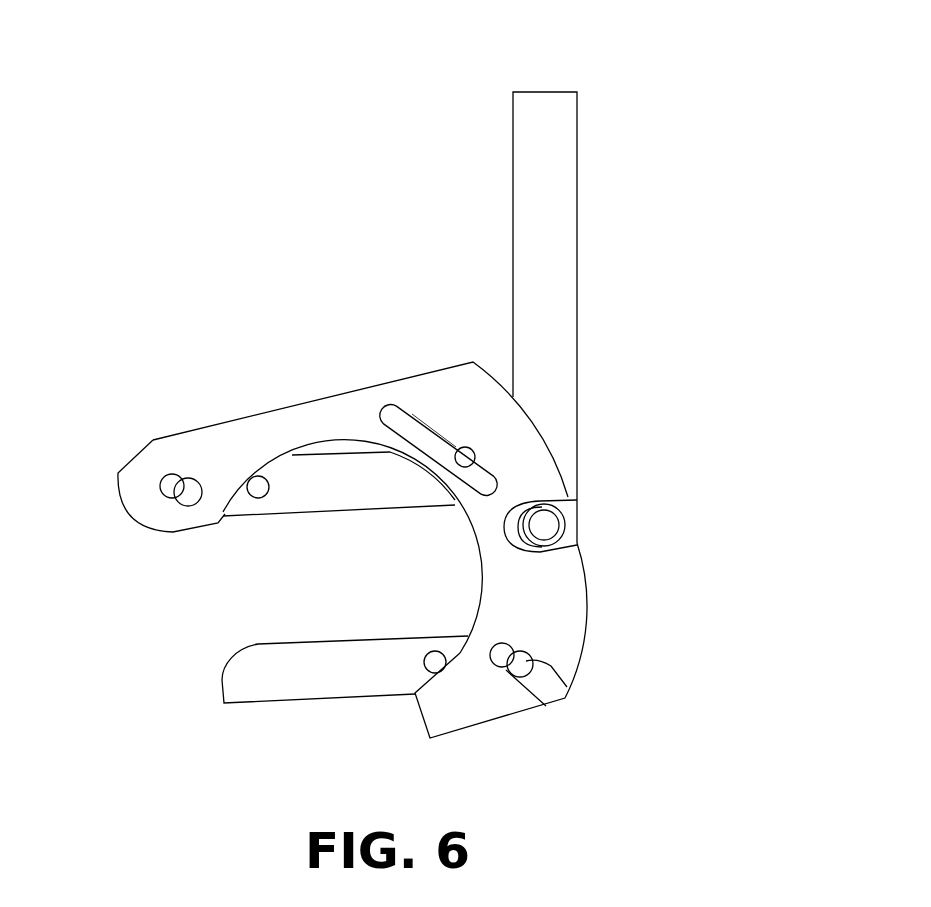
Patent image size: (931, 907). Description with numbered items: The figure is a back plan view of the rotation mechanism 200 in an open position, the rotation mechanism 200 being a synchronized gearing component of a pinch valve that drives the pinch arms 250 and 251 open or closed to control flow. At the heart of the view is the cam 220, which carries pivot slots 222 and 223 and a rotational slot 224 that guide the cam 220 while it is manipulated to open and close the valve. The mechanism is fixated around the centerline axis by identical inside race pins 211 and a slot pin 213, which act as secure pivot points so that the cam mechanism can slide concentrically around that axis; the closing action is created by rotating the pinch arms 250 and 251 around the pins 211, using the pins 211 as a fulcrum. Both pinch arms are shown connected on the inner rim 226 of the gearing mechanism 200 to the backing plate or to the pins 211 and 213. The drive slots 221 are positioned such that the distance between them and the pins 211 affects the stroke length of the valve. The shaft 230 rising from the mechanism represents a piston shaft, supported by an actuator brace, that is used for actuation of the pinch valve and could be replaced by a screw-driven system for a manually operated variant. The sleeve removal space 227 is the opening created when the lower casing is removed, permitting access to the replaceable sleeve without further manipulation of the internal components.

The rotation mechanism 200 is at (655, 68).
The shaft 230 is at (540, 164).
The cam 220 is at (258, 437).
The slot pin 213 is at (464, 448).
The rotational slot 224 is at (412, 420).
The drive slots 221 is at (188, 490).
The pivot slot 222 is at (164, 483).
The pivot slot 223 is at (536, 668).
The inside race pins 211 is at (258, 495).
The pinch arm 251 is at (385, 476).
The inner rim 226 is at (477, 612).
The sleeve removal space 227 is at (322, 630).
The pinch arm 250 is at (262, 672).